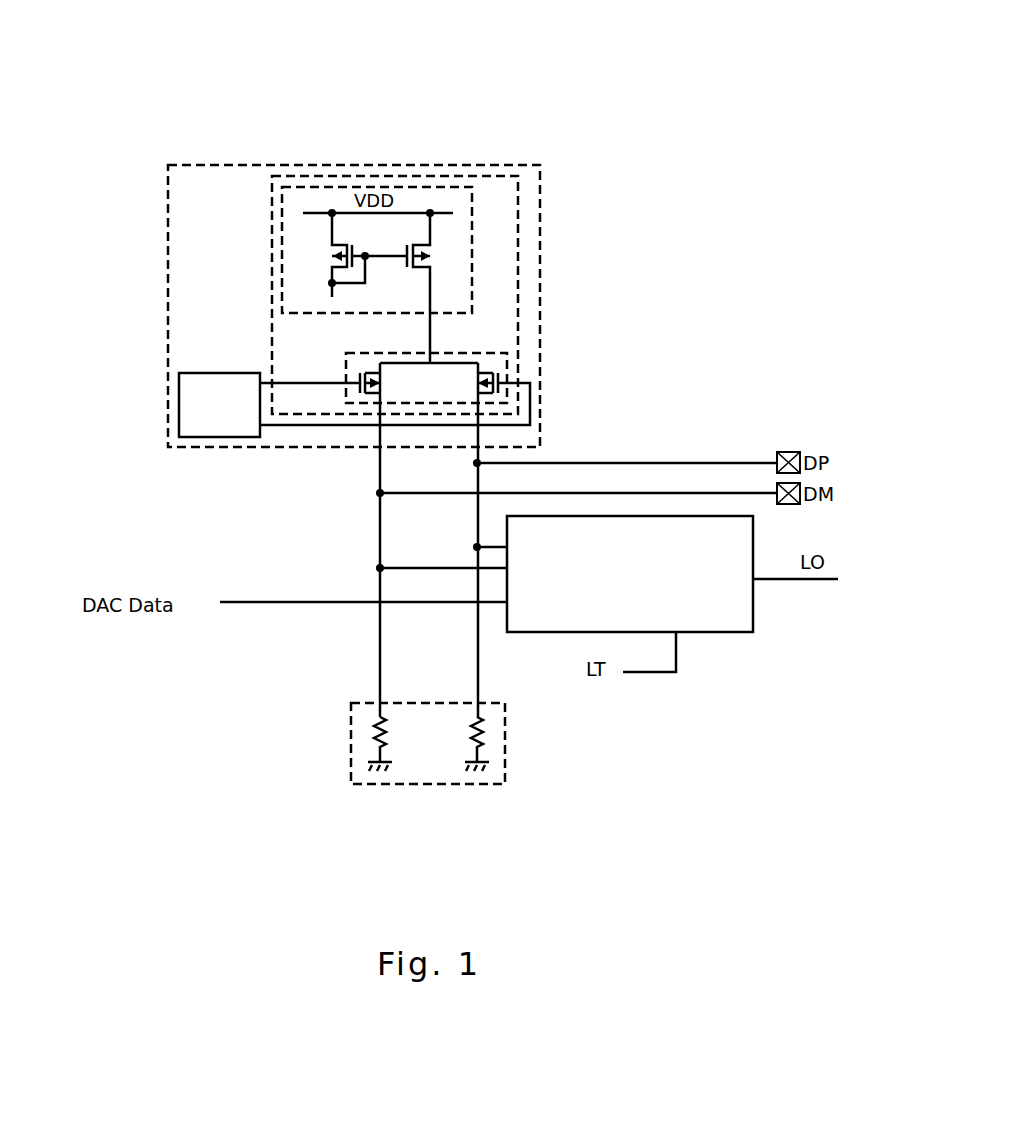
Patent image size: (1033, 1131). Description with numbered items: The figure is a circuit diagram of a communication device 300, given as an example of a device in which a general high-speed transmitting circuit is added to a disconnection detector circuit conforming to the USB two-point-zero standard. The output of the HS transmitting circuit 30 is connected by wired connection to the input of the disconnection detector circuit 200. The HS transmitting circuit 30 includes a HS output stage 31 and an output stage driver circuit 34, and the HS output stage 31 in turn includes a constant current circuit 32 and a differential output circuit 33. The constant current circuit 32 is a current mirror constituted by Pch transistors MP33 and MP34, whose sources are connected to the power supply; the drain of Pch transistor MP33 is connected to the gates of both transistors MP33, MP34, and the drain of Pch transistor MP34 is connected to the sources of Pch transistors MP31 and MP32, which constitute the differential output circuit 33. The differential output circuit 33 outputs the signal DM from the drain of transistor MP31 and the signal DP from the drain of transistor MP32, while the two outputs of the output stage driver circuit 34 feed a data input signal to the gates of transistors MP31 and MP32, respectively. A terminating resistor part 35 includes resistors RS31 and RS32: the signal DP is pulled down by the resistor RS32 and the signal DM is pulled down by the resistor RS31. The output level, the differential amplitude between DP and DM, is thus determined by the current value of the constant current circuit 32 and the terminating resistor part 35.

The communication device 300 is at (492, 24).
The HS transmitting circuit 30 is at (230, 165).
The HS output stage 31 is at (313, 176).
The constant current circuit 32 is at (443, 187).
The differential output circuit 33 is at (518, 377).
The output stage driver circuit 34 is at (179, 402).
The terminating resistor part 35 is at (428, 784).
The disconnection detector circuit 200 is at (717, 632).
The Pch transistor MP31 is at (369, 398).
The Pch transistor MP32 is at (485, 372).
The Pch transistor MP33 is at (333, 256).
The Pch transistor MP34 is at (430, 256).
The resistor RS31 is at (367, 730).
The resistor RS32 is at (487, 730).